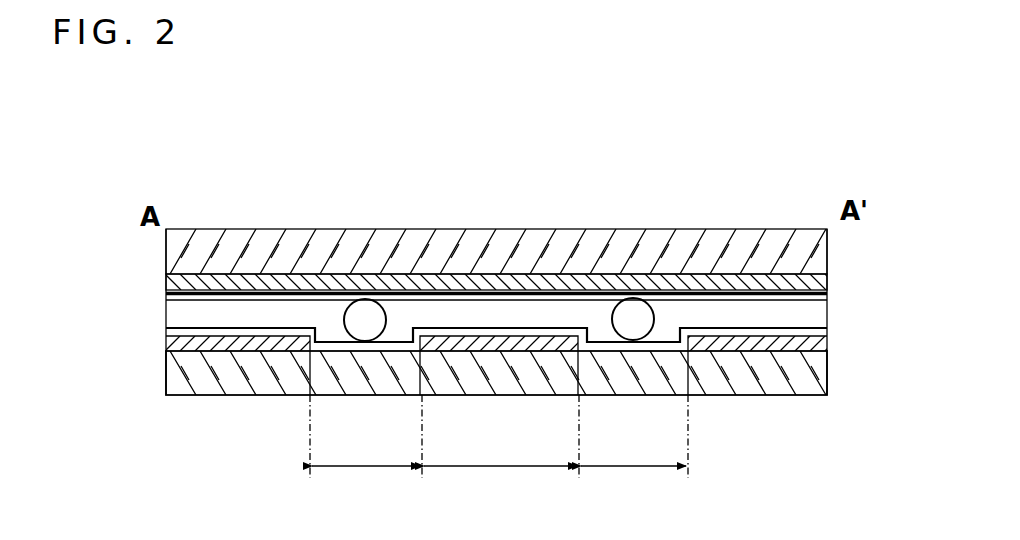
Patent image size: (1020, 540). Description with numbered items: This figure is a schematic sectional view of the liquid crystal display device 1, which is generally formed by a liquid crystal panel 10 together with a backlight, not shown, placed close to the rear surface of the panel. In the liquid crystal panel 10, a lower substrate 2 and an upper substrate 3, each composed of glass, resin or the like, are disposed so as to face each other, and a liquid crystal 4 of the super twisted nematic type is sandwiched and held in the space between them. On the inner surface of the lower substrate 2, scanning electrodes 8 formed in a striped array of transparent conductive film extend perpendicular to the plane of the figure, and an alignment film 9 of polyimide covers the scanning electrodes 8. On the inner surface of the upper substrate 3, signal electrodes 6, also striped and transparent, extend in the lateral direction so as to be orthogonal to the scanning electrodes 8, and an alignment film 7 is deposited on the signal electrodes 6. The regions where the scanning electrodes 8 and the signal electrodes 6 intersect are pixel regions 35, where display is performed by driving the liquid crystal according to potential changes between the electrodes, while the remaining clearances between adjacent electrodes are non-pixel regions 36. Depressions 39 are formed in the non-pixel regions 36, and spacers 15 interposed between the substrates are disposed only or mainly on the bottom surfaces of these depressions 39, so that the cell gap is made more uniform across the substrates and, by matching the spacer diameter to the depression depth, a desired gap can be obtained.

The liquid crystal display device 1 is at (744, 166).
The liquid crystal panel 10 is at (784, 204).
The lower substrate 2 is at (822, 372).
The upper substrate 3 is at (822, 255).
The liquid crystal 4 is at (822, 307).
The signal electrodes 6 is at (167, 284).
The alignment film 7 is at (167, 298).
The scanning electrodes 8 is at (219, 345).
The alignment film 9 is at (167, 334).
The spacers 15 is at (362, 332).
The depressions 39 is at (332, 325).
The pixel regions 35 is at (500, 488).
The non-pixel regions 36 is at (499, 453).